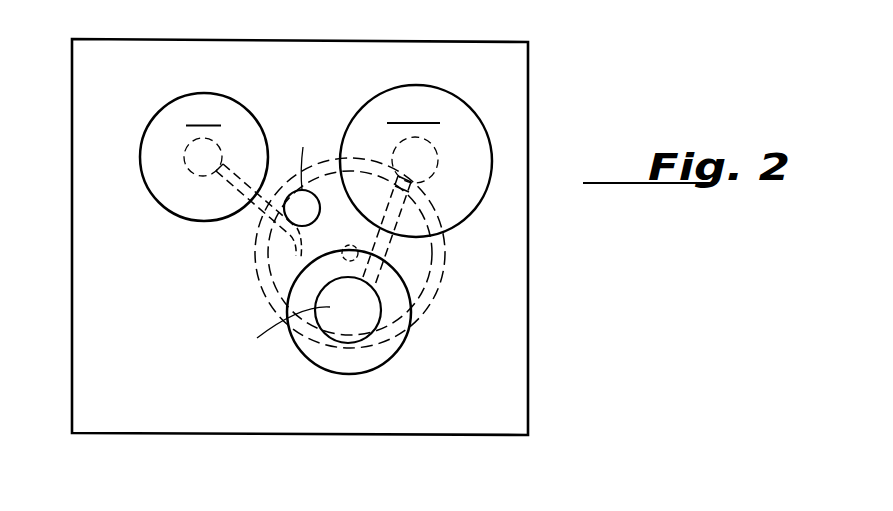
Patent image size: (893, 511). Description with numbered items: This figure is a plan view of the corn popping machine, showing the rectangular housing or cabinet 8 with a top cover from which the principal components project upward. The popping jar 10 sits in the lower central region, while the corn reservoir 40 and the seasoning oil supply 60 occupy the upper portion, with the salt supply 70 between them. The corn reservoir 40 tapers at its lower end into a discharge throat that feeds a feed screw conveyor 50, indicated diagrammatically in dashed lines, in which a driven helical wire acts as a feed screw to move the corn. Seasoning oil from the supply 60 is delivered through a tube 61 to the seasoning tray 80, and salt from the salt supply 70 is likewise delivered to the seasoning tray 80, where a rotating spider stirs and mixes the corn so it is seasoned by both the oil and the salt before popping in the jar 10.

The housing or cabinet 8 is at (533, 351).
The popping jar 10 is at (327, 360).
The corn reservoir 40 is at (473, 143).
The feed screw conveyor 50 is at (436, 254).
The seasoning oil supply 60 is at (157, 147).
The tube 61 is at (250, 212).
The salt supply 70 is at (300, 218).
The seasoning tray 80 is at (437, 282).